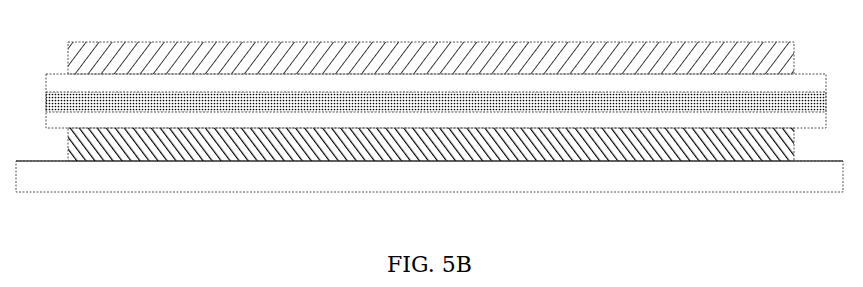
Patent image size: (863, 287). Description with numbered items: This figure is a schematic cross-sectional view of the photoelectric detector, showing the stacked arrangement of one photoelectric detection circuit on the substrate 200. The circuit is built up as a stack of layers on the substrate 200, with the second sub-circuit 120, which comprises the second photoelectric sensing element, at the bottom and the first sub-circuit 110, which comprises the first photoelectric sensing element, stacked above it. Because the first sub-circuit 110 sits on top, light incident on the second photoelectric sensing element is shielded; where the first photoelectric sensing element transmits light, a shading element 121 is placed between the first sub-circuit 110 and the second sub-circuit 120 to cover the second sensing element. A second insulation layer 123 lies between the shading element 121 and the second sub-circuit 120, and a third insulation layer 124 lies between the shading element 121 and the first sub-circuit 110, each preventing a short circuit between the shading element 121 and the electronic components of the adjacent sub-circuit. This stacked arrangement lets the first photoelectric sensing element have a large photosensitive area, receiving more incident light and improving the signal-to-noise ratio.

The first sub-circuit 110 is at (431, 46).
The second sub-circuit 120 is at (436, 124).
The shading element 121 is at (436, 160).
The second insulation layer 123 is at (431, 172).
The third insulation layer 124 is at (436, 73).
The substrate 200 is at (429, 192).